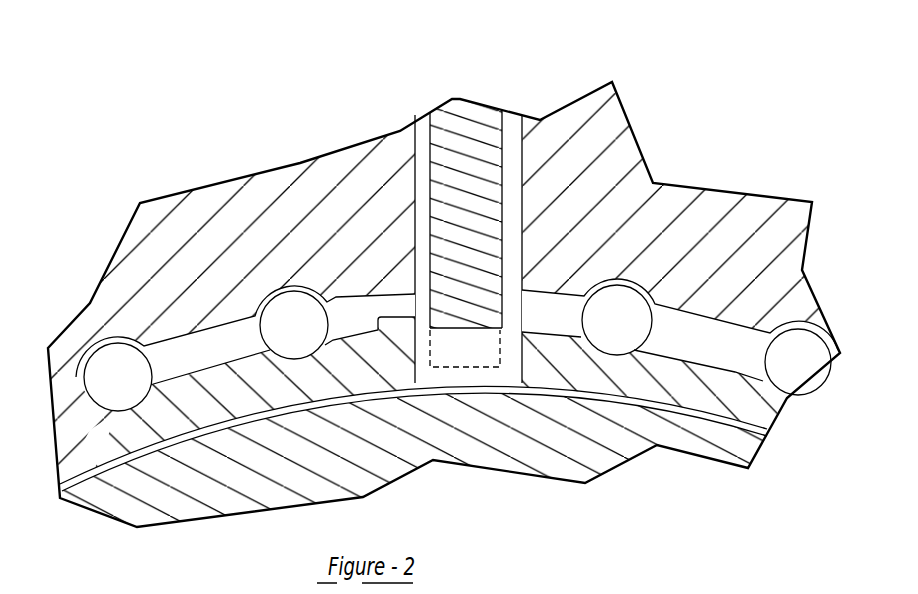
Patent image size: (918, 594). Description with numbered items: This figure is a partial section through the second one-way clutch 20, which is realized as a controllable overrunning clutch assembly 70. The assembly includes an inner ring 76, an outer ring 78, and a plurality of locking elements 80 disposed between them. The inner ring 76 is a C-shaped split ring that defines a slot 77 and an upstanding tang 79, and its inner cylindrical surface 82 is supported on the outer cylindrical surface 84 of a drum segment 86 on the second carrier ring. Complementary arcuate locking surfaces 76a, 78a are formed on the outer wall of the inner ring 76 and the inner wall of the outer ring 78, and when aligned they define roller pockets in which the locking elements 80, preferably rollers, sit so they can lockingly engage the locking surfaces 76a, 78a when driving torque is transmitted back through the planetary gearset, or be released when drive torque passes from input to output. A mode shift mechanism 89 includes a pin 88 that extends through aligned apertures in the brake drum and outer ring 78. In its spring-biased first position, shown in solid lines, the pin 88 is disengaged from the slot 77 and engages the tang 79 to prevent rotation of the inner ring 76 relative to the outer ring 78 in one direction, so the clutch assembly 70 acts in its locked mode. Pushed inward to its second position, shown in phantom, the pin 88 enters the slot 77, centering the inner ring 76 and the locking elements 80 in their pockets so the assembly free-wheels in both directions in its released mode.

The second one-way clutch 20 is at (443, 295).
The controllable overrunning clutch assembly 70 is at (649, 133).
The inner ring 76 is at (743, 403).
The arcuate locking surface of inner ring 76a is at (117, 412).
The slot 77 is at (520, 367).
The outer ring 78 is at (785, 230).
The arcuate locking surface of outer ring 78a is at (115, 342).
The tang 79 is at (392, 320).
The locking elements 80 is at (808, 353).
The inner cylindrical surface 82 is at (717, 417).
The outer cylindrical surface 84 is at (688, 413).
The drum segment 86 is at (203, 478).
The pin 88 is at (459, 123).
The mode shift mechanism 89 is at (509, 90).